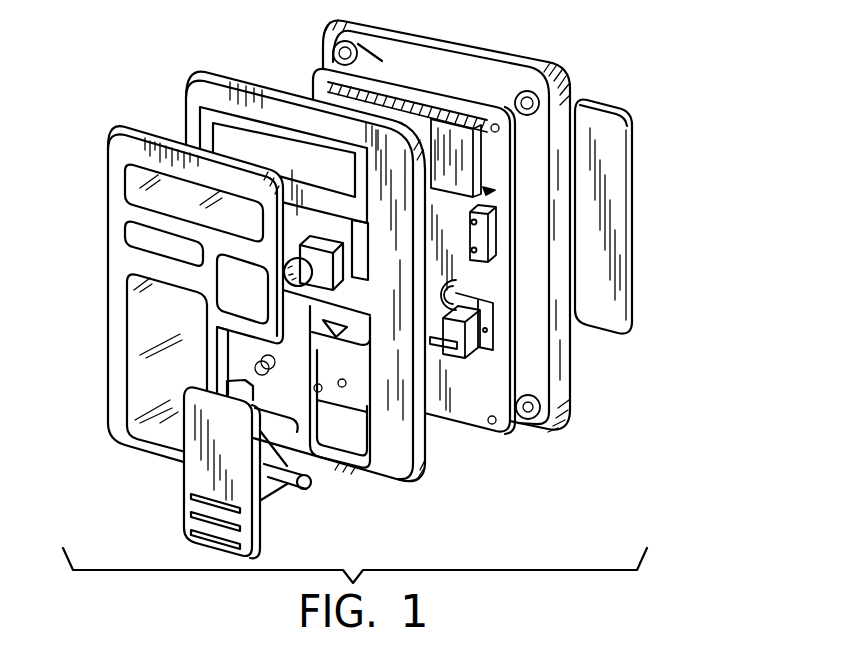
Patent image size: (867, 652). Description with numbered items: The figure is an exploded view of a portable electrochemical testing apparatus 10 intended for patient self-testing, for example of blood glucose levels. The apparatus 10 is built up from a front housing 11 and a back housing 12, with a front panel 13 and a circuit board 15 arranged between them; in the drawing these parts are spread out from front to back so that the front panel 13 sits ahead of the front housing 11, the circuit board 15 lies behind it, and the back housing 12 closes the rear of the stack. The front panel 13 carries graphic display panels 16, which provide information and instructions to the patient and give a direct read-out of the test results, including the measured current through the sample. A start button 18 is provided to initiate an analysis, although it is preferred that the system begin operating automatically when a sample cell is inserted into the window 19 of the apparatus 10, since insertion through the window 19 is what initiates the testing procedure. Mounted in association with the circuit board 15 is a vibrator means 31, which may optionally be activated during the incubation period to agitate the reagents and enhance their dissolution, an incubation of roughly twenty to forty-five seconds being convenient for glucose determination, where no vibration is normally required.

The portable electrochemical testing apparatus 10 is at (358, 289).
The front housing 11 is at (305, 297).
The back housing 12 is at (558, 388).
The front panel 13 is at (156, 298).
The circuit board 15 is at (414, 275).
The graphic display panels 16 is at (150, 380).
The start button 18 is at (290, 273).
The window 19 is at (215, 518).
The vibrator means 31 is at (440, 345).